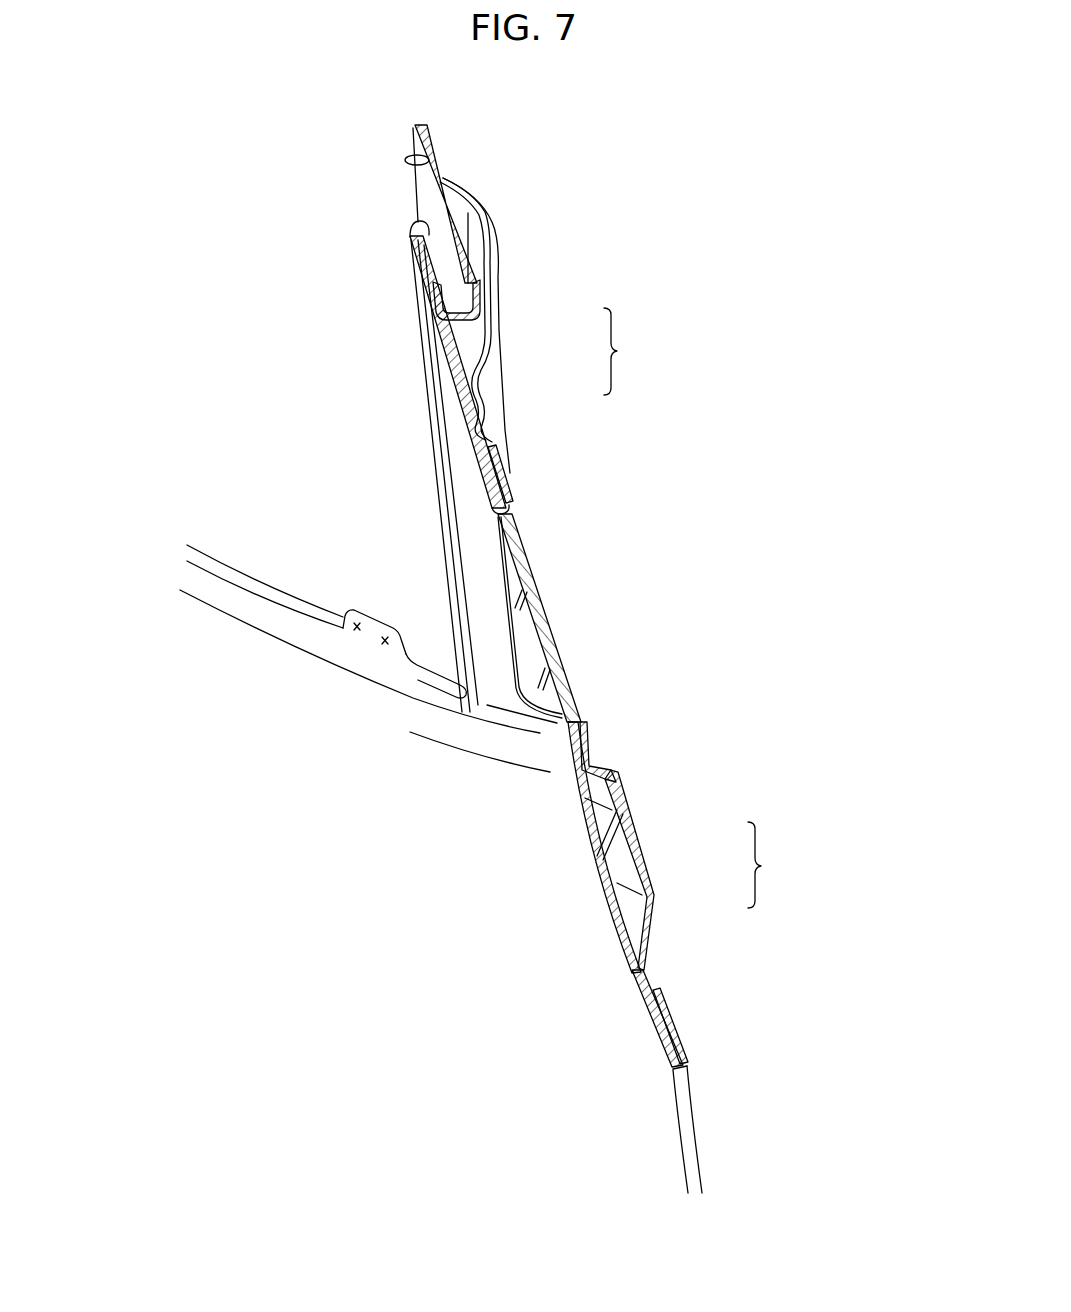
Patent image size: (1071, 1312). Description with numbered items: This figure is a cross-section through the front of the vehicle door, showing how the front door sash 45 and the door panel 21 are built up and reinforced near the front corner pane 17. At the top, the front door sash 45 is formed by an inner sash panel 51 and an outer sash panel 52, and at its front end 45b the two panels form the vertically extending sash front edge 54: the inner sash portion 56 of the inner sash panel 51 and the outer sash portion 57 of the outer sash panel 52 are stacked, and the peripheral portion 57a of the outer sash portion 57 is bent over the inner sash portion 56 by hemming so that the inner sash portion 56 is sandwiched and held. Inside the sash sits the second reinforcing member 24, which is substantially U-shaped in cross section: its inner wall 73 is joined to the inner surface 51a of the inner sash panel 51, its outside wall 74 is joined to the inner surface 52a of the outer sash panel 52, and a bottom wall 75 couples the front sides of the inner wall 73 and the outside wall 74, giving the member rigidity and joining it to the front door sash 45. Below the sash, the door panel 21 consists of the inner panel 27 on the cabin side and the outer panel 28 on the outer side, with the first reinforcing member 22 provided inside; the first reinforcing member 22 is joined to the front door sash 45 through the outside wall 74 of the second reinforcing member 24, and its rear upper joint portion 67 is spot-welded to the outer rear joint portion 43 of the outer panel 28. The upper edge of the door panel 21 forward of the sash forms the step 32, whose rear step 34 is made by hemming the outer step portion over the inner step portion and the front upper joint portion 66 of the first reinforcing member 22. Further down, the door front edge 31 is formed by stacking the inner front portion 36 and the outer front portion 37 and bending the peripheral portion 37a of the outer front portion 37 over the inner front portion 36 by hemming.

The inner surface of inner sash panel 51a is at (424, 157).
The second reinforcing member 24 is at (463, 212).
The inner wall 73 is at (472, 253).
The inner surface of outer sash panel 52a is at (418, 227).
The outside wall 74 is at (428, 285).
The inner sash panel 51 is at (500, 348).
The front door sash 45 is at (625, 351).
The bottom wall 75 is at (460, 352).
The outer sash panel 52 is at (460, 442).
The inner sash portion 56 is at (504, 470).
The peripheral portion of outer sash portion 57a is at (506, 497).
The outer sash portion 57 is at (479, 506).
The front end of front door sash 45b is at (500, 588).
The front corner pane 17 is at (538, 648).
The rear upper joint portion 67 is at (383, 613).
The outer rear joint portion 43 is at (376, 634).
The sash front edge 54 is at (505, 655).
The rear step 34 is at (487, 777).
The step 32 is at (565, 740).
The front upper joint portion 66 is at (590, 742).
The first reinforcing member 22 is at (620, 824).
The inner panel 27 is at (635, 846).
The door panel 21 is at (772, 865).
The outer panel 28 is at (545, 905).
The peripheral portion of outer front portion 37a is at (677, 1027).
The inner front portion 36 is at (655, 1017).
The outer front portion 37 is at (657, 1077).
The door front edge 31 is at (668, 1138).